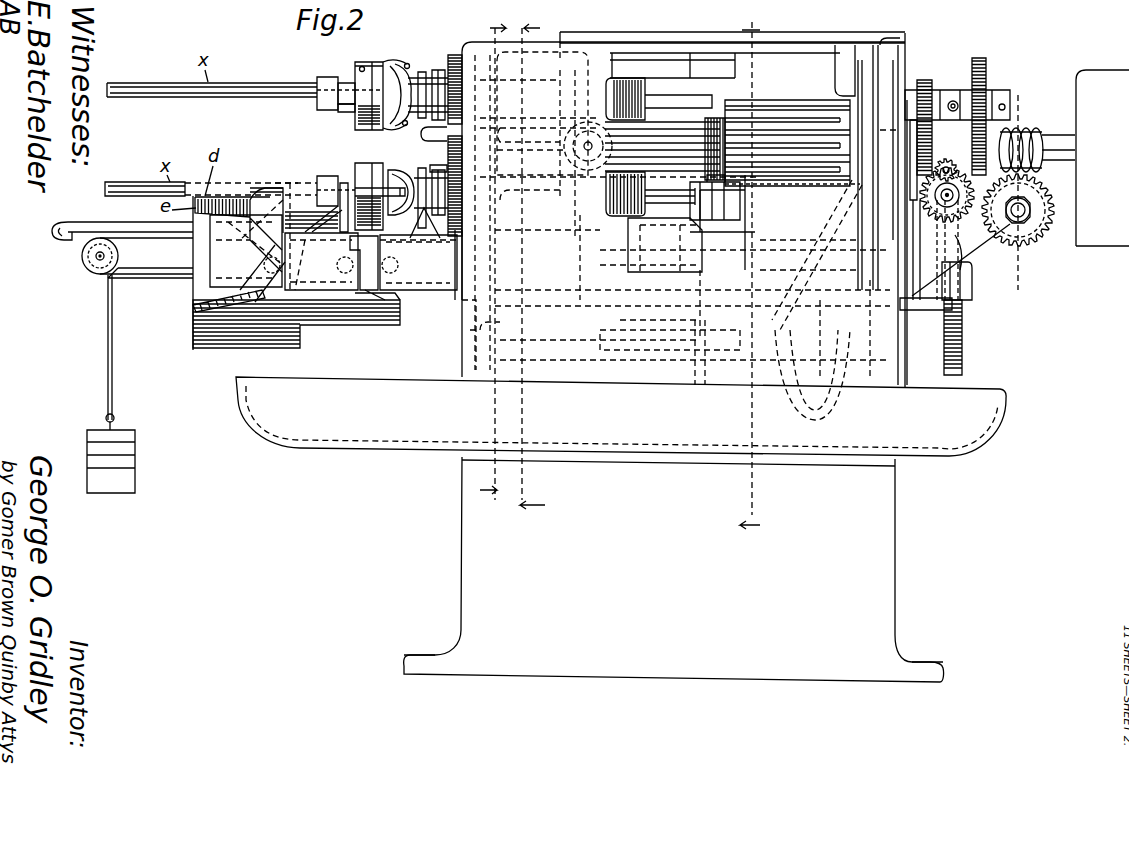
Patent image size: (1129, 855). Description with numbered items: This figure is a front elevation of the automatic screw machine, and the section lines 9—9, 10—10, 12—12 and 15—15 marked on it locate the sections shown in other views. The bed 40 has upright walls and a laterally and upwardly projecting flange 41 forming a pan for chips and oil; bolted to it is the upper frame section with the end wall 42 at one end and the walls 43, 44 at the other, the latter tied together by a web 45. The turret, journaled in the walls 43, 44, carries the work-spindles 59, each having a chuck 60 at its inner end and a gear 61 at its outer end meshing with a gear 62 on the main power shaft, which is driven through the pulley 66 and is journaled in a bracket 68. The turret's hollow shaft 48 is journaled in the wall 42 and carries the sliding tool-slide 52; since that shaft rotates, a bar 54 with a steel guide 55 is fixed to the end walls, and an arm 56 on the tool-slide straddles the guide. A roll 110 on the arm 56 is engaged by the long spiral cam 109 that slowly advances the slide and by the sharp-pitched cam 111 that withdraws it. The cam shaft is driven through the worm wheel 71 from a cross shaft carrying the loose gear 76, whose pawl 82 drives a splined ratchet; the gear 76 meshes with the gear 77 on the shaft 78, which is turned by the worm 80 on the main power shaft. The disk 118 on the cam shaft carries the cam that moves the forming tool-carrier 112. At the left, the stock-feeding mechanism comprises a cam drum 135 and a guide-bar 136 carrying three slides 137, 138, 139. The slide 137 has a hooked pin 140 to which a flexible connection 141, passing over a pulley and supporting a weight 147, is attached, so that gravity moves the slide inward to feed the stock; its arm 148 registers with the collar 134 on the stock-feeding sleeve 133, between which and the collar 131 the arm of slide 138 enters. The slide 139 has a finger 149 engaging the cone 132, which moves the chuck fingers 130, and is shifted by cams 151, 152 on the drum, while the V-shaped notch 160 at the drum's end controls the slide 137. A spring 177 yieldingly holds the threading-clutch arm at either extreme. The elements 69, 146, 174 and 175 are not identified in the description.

The section line 9— 9 is at (1016, 195).
The section line 10— 10 is at (754, 268).
The section line 12— 12 is at (530, 255).
The section line 15— 15 is at (492, 256).
The bed 40 is at (897, 562).
The flange 41 is at (975, 425).
The end wall 42 is at (884, 72).
The wall 43 is at (462, 350).
The wall 44 is at (605, 360).
The web 45 is at (540, 60).
The hollow shaft 48 is at (668, 132).
The tool-slide 52 is at (795, 186).
The bar 54 is at (800, 34).
The guide 55 is at (800, 70).
The arm 56 is at (905, 40).
The work-spindles 59 is at (480, 145).
The chuck 60 is at (640, 80).
The gears 61 is at (452, 56).
The gear 62 is at (424, 130).
The pulley 66 is at (1104, 235).
The bracket 68 is at (980, 276).
The drive bar 69 is at (1055, 135).
The worm wheel 71 is at (962, 360).
The link 175 is at (985, 255).
The gear 76 is at (918, 210).
The gear 77 is at (1035, 240).
The shaft 78 is at (1030, 215).
The worm 80 is at (1024, 128).
The pawl 82 is at (910, 172).
The spiral cam 109 is at (805, 335).
The roll 110 is at (845, 235).
The cam 111 is at (845, 260).
The forming tool-carrier 112 is at (668, 240).
The disk 118 is at (698, 372).
The fingers 130 is at (392, 62).
The collar 131 is at (360, 115).
The cone 132 is at (418, 78).
The stock-feeding sleeve 133 is at (342, 104).
The collar 134 is at (324, 78).
The cam drum 135 is at (220, 345).
The guide-bar 136 is at (158, 268).
The slide 137 is at (246, 251).
The intermediate slide 138 is at (321, 236).
The slide 139 is at (403, 262).
The hooked pin 140 is at (126, 226).
The flexible connection 141 is at (108, 326).
The pulley 146 is at (90, 270).
The weight 147 is at (128, 447).
The arm 148 is at (292, 195).
The finger 149 is at (462, 240).
The cam 151 is at (395, 300).
The cam 152 is at (400, 232).
The V-shaped notch 160 is at (195, 302).
The gear 174 is at (975, 60).
The spring 177 is at (928, 310).